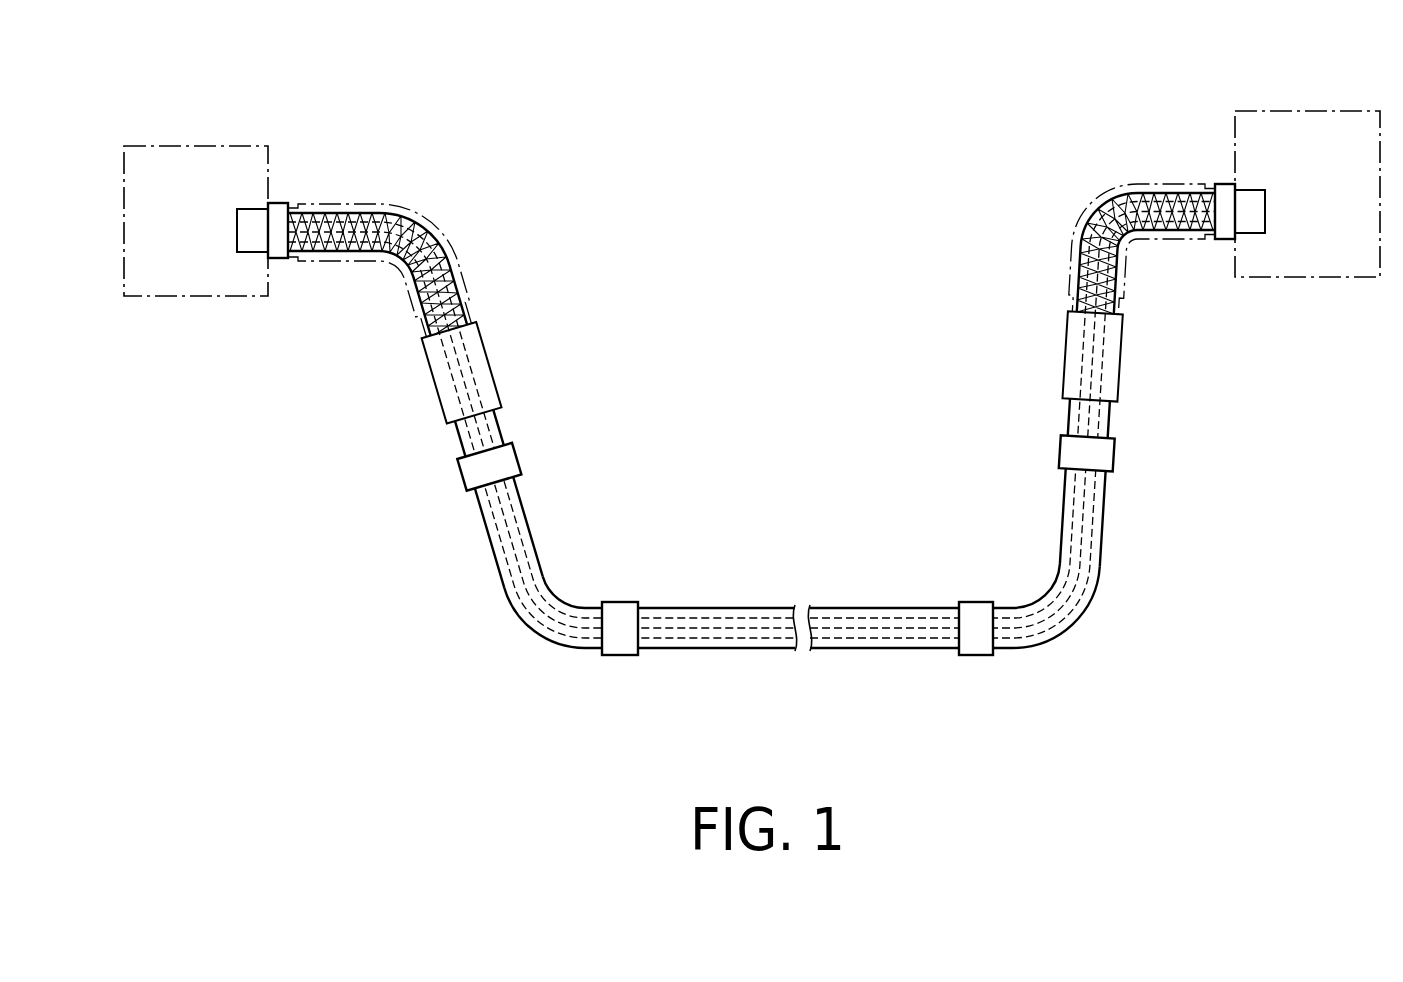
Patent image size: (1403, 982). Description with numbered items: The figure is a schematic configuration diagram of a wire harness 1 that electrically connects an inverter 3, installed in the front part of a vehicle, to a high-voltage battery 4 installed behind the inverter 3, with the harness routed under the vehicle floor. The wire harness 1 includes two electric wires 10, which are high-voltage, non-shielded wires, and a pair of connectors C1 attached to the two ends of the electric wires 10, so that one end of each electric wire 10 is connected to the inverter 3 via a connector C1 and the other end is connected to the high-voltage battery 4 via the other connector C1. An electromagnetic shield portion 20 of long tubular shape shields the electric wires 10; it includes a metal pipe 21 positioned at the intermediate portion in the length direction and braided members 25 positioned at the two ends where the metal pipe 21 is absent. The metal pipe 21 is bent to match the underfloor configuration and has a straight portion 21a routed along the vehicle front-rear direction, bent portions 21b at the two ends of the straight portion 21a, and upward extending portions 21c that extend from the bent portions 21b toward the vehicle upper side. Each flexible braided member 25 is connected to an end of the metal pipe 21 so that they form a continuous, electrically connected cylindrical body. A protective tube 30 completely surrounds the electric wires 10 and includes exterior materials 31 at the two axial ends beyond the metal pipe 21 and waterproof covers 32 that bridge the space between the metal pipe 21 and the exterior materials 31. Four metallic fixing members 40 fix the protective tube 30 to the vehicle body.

The wire harness 1 is at (1145, 118).
The inverter 3 is at (195, 146).
The high-voltage battery 4 is at (1308, 111).
The connector C1 is at (252, 209).
The electric wire 10 is at (755, 629).
The electromagnetic shield portion 20 is at (349, 347).
The metal pipe 21 is at (765, 542).
The straight portion 21a is at (887, 649).
The bent portion 21b is at (523, 623).
The upward extending portion 21c is at (482, 517).
The braided member 25 is at (420, 308).
The protective tube 30 is at (578, 275).
The exterior material 31 is at (470, 270).
The waterproof cover 32 is at (488, 343).
The fixing member 40 is at (518, 461).